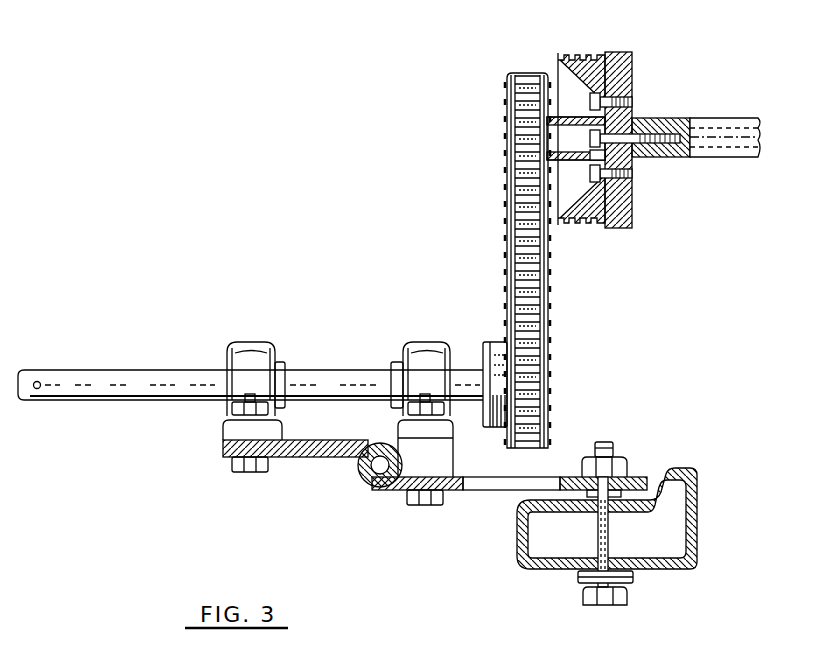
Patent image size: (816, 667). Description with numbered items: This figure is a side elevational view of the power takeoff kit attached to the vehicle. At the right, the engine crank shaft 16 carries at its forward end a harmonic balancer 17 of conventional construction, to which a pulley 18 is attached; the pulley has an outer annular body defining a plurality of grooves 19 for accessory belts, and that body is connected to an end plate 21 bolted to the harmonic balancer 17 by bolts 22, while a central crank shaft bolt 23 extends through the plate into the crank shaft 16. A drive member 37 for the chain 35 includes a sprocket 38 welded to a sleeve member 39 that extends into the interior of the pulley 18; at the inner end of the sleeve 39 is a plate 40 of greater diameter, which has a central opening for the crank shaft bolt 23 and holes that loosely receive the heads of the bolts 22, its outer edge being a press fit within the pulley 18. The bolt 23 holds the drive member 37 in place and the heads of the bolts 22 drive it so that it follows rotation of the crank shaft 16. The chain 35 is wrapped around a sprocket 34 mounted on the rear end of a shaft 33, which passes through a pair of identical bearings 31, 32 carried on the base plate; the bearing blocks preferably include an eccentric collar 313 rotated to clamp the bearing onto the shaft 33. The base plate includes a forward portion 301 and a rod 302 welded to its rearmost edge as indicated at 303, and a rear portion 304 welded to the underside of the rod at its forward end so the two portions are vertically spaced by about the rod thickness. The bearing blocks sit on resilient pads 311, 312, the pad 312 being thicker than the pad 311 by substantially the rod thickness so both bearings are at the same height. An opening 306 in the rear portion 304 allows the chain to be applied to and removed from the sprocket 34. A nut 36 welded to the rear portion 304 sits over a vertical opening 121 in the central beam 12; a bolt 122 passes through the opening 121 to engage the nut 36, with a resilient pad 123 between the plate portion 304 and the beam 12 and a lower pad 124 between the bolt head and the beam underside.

The central beam 12 is at (668, 570).
The crank shaft 16 is at (721, 128).
The harmonic balancer 17 is at (619, 66).
The pulley 18 is at (584, 57).
The grooves 19 is at (590, 53).
The end plate 21 is at (602, 99).
The bolts 22 is at (641, 160).
The crank shaft bolt 23 is at (623, 178).
The bearing 31 is at (245, 356).
The bearing 32 is at (416, 356).
The shaft 33 is at (137, 378).
The sprocket 34 is at (492, 354).
The chain 35 is at (526, 260).
The nut 36 is at (628, 458).
The drive member 37 is at (502, 152).
The sprocket 38 is at (527, 98).
The sleeve member 39 is at (568, 108).
The plate 40 is at (594, 162).
The vertical opening 121 is at (618, 496).
The bolt 122 is at (607, 598).
The resilient pad 123 is at (573, 476).
The lower pad 124 is at (578, 574).
The forward portion 301 is at (300, 453).
The rod 302 is at (358, 477).
The weld 303 is at (373, 441).
The rear portion 304 is at (393, 498).
The opening 306 is at (508, 484).
The resilient pad 311 is at (243, 438).
The resilient pad 312 is at (439, 456).
The collar 313 is at (283, 364).